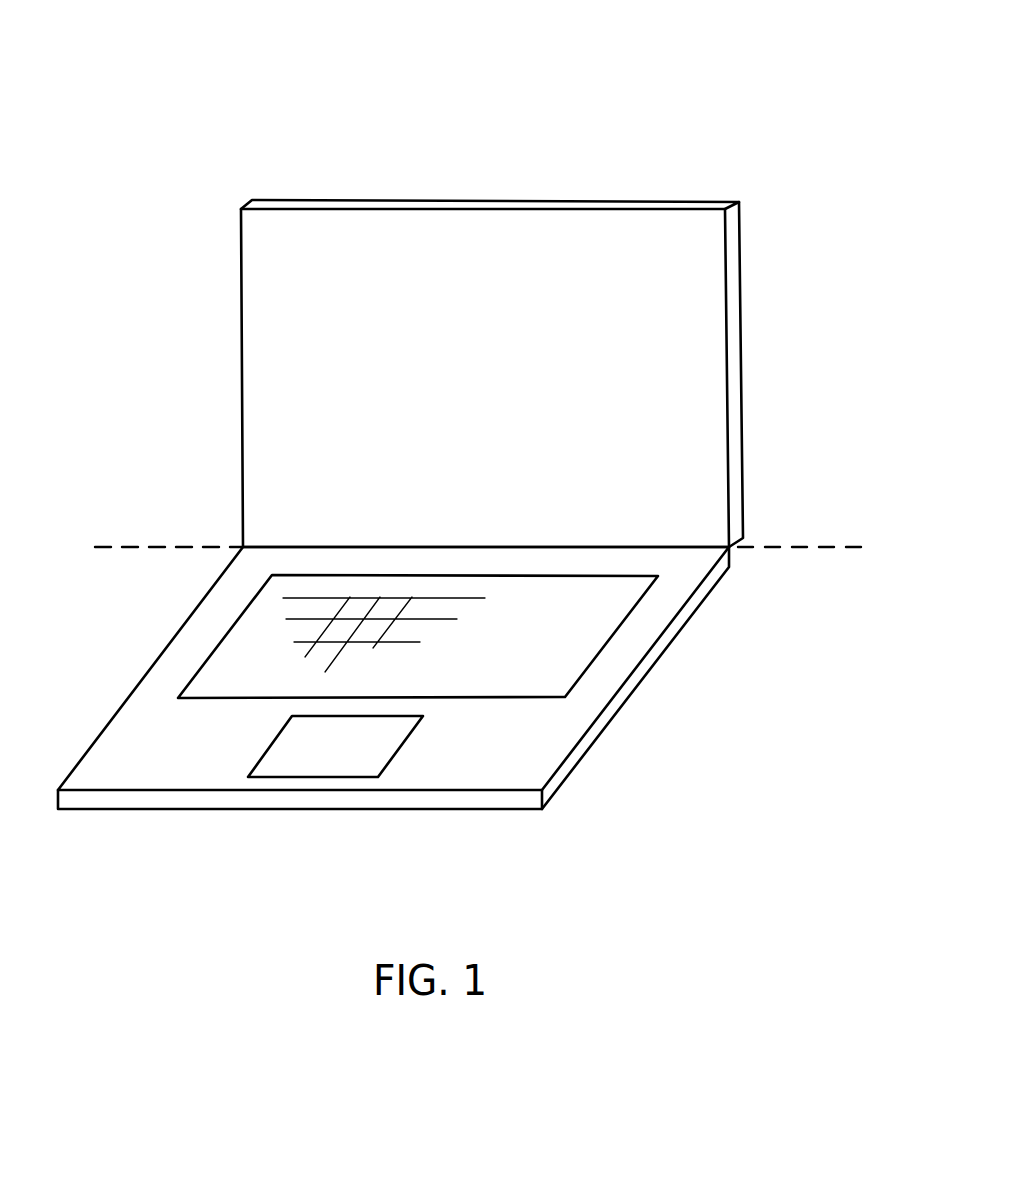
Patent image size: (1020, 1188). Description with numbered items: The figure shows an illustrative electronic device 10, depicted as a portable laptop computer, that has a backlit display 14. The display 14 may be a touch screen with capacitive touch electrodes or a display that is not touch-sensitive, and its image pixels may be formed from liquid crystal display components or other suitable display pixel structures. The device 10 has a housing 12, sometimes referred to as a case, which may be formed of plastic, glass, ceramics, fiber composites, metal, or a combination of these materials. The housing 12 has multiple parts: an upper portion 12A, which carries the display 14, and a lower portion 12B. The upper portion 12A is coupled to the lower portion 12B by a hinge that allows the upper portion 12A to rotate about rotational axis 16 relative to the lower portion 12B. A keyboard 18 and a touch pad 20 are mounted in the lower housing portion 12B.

The electronic device 10 is at (736, 88).
The housing 12 is at (741, 232).
The upper portion 12A is at (225, 208).
The lower portion 12B is at (567, 809).
The display 14 is at (459, 242).
The rotational axis 16 is at (103, 547).
The keyboard 18 is at (481, 673).
The touch pad 20 is at (320, 760).